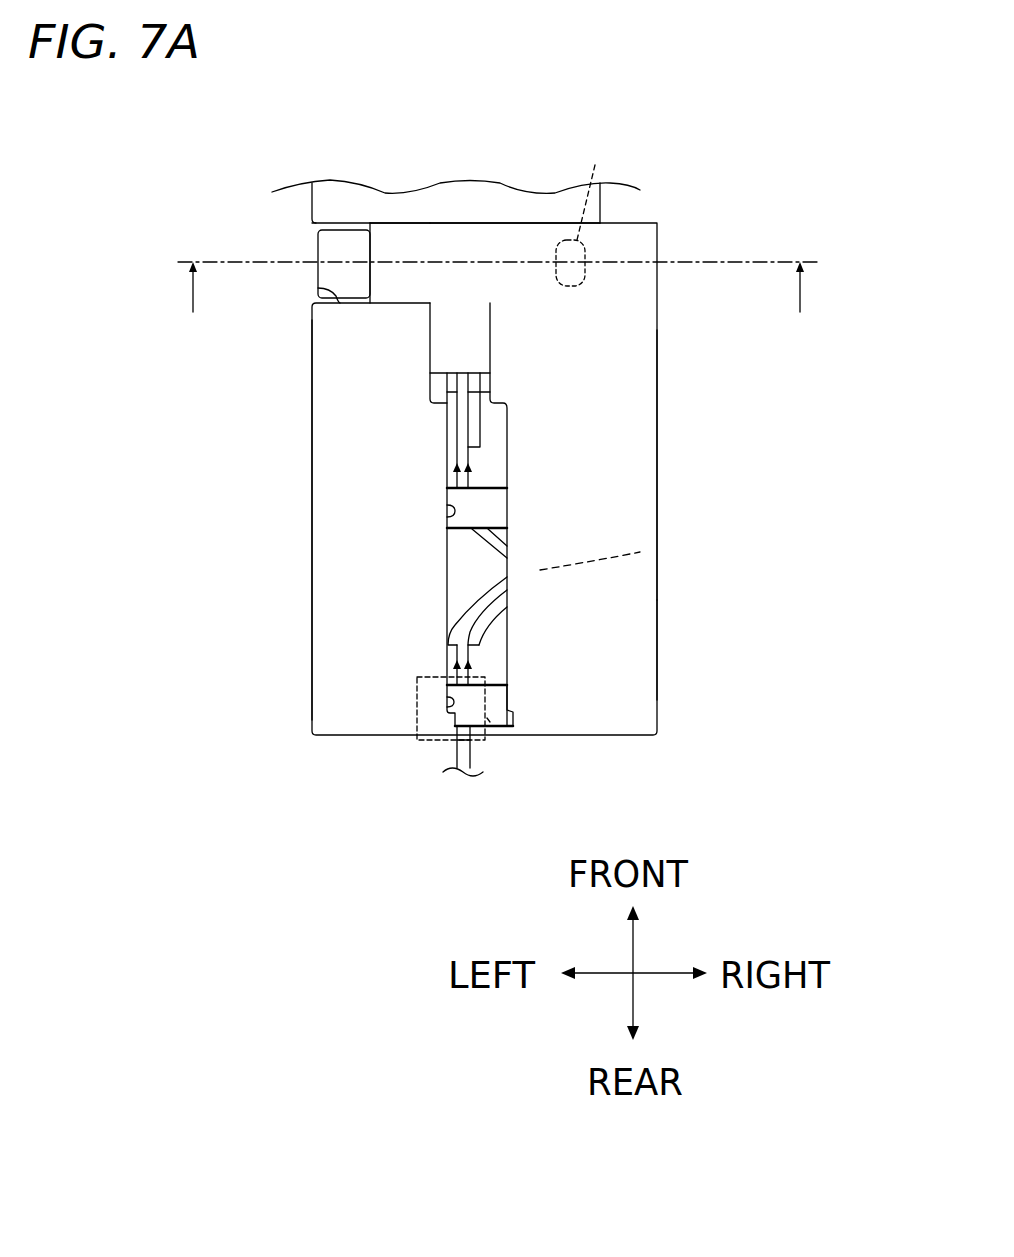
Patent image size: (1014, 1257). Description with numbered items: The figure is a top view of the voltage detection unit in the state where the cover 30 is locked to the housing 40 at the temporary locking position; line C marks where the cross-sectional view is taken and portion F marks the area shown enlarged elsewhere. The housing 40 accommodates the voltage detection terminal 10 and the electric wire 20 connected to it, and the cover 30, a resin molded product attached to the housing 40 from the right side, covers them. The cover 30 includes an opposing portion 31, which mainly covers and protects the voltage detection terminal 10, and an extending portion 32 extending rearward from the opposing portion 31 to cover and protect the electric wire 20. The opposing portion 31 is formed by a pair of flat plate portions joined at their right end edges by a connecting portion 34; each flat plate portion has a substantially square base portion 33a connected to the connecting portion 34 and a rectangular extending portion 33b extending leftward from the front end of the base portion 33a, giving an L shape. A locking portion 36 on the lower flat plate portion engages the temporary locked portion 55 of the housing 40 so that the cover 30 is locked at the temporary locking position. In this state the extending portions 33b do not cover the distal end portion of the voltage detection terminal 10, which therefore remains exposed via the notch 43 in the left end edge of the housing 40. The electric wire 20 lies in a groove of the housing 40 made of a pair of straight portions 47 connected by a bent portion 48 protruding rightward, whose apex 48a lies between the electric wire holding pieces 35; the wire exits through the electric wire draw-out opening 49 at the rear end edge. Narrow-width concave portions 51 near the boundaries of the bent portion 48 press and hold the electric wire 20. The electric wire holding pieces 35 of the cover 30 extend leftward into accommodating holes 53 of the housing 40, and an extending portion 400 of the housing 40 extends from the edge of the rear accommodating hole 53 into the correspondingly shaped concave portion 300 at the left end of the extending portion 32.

The voltage detection terminal 10 is at (308, 236).
The electric wire 20 is at (445, 418).
The cover 30 is at (672, 418).
The opposing portion 31 is at (560, 128).
The extending portion 32 is at (657, 590).
The base portion 33a is at (557, 327).
The extending portion 33b is at (428, 243).
The connecting portion 34 is at (657, 330).
The electric wire holding piece 35 is at (490, 517).
The locking portion 36 is at (594, 189).
The housing 40 is at (290, 639).
The notch 43 is at (317, 289).
The straight portion 47 is at (447, 437).
The bent portion 48 is at (470, 543).
The apex 48a is at (640, 552).
The electric wire draw-out opening 49 is at (473, 742).
The narrow-width concave portion 51 is at (455, 467).
The accommodating hole 53 is at (449, 512).
The temporary locked portion 55 is at (584, 258).
The concave portion 300 is at (517, 722).
The extending portion 400 is at (455, 718).
The portion F is at (487, 718).
The line C- C is at (497, 300).